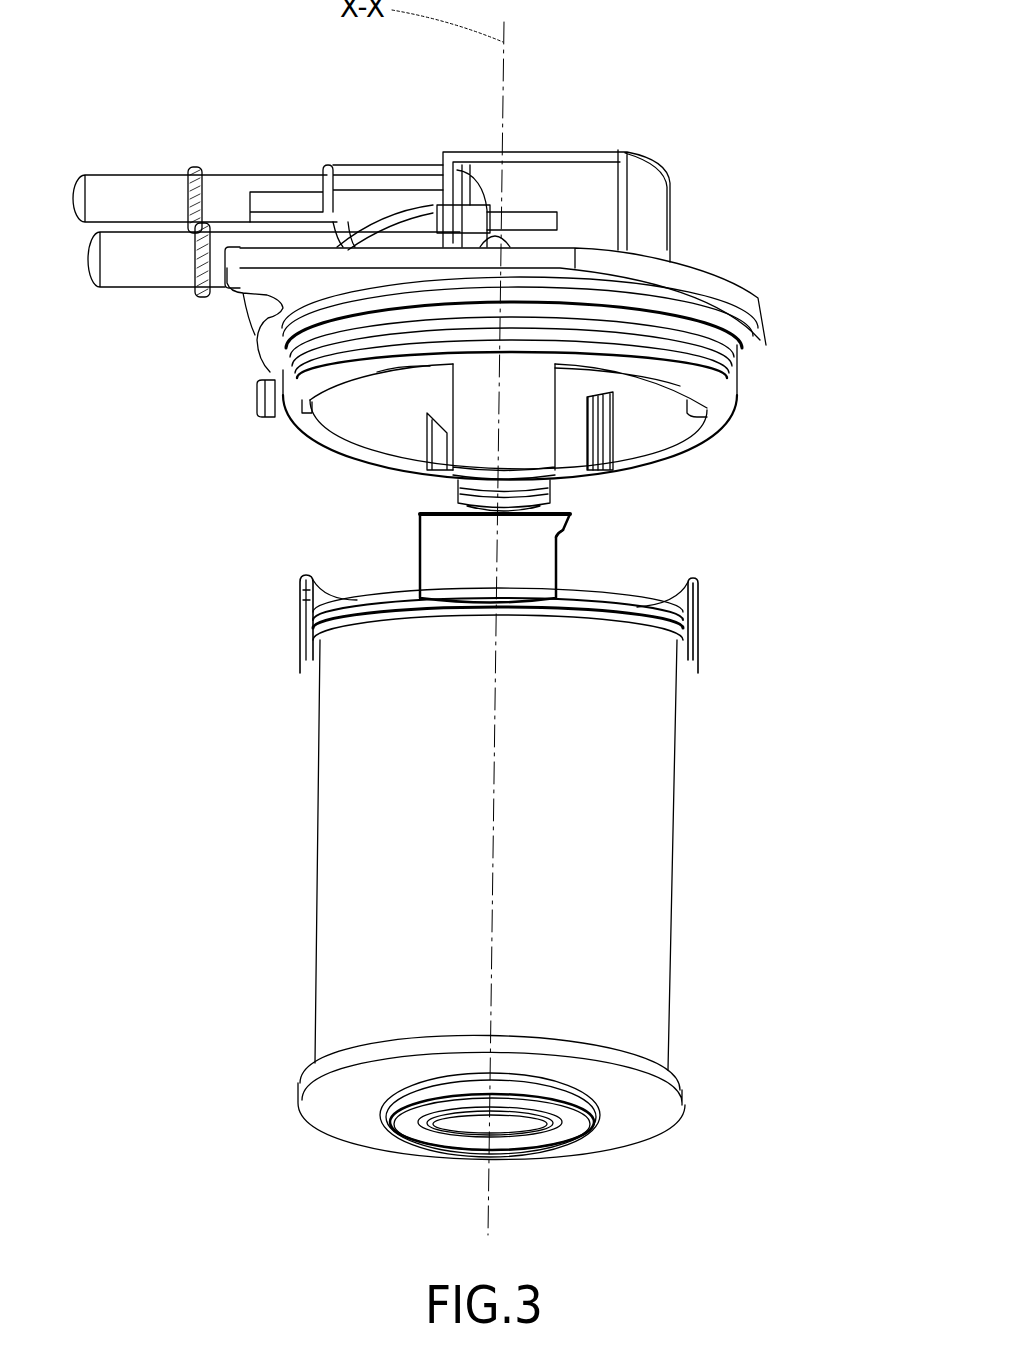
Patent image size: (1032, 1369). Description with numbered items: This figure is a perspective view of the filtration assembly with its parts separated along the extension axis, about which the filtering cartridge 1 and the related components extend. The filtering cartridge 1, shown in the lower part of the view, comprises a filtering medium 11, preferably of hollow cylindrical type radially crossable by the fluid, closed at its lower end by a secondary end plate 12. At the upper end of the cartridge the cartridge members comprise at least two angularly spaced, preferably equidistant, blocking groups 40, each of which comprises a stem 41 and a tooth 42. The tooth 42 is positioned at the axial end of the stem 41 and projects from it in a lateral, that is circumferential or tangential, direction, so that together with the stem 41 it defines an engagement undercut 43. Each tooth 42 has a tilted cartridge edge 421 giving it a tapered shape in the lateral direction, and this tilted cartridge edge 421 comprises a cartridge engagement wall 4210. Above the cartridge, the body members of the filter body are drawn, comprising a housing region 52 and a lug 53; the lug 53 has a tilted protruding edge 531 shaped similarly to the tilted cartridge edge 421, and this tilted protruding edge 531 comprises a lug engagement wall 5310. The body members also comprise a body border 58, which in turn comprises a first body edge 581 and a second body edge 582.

The filtering cartridge 1 is at (277, 857).
The filtering medium 11 is at (625, 862).
The secondary end plate 12 is at (323, 1097).
The blocking group 40 is at (272, 583).
The stem 41 is at (605, 580).
The tooth 42 is at (290, 605).
The tilted cartridge edge 421 is at (300, 603).
The engagement undercut 43 is at (528, 567).
The cartridge engagement wall 4210 is at (563, 538).
The housing region 52 is at (443, 420).
The lug 53 is at (307, 407).
The tilted protruding edge 531 is at (437, 445).
The lug engagement wall 5310 is at (392, 431).
The body border 58 is at (635, 458).
The first body edge 581 is at (617, 413).
The second body edge 582 is at (597, 432).